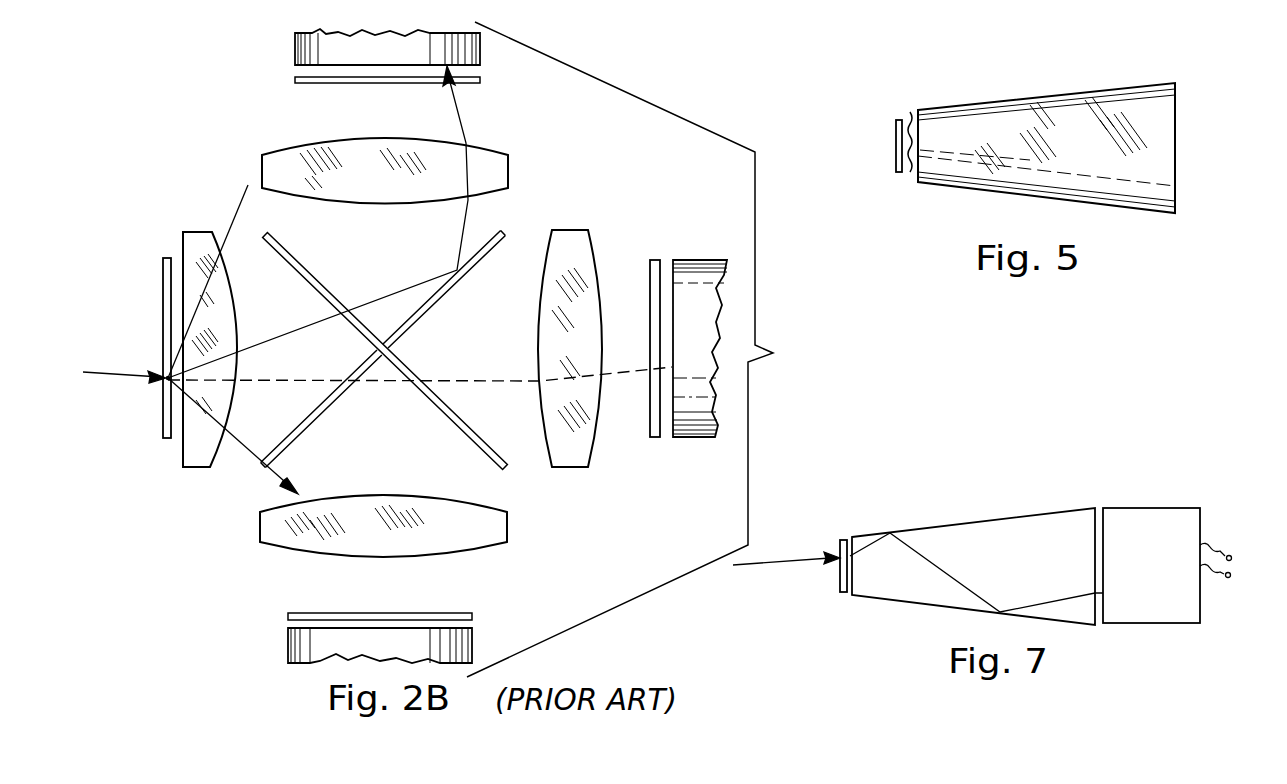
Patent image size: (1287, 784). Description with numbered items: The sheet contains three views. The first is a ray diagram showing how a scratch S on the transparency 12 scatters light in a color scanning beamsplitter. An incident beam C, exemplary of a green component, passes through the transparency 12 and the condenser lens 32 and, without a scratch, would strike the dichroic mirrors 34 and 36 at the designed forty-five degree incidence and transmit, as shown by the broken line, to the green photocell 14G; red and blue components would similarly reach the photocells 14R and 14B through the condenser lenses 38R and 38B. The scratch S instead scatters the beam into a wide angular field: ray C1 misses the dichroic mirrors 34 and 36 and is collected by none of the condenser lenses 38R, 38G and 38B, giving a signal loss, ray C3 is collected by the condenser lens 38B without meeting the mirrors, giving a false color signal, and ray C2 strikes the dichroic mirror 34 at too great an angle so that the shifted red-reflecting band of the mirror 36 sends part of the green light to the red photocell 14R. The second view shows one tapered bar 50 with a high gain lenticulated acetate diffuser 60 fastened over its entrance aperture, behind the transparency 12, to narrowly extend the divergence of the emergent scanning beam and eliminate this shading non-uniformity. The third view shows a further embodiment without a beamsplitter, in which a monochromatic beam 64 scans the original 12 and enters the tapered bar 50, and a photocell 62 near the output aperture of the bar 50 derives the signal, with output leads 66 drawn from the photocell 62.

In FIG. 2B, the transparency 12 is at (163, 274).
In FIG. 5, the transparency 12 is at (896, 146).
In FIG. 7, the transparency 12 is at (840, 576).
In FIG. 2B, the red photocell 14R is at (296, 58).
In FIG. 2B, the green photocell 14G is at (703, 264).
In FIG. 2B, the blue photocell 14B is at (288, 645).
In FIG. 2B, the condenser lens 32 is at (192, 463).
In FIG. 2B, the dichroic mirror 34 is at (483, 255).
In FIG. 2B, the dichroic mirror 36 is at (298, 253).
In FIG. 2B, the red condenser lens 38R is at (492, 158).
In FIG. 2B, the green condenser lens 38G is at (570, 233).
In FIG. 2B, the blue condenser lens 38B is at (482, 540).
In FIG. 2B, the incident beam C is at (103, 372).
In FIG. 2B, the scattered ray C1 is at (232, 202).
In FIG. 2B, the scattered ray C2 is at (278, 328).
In FIG. 2B, the scattered ray C3 is at (248, 466).
In FIG. 2B, the scratch S is at (164, 385).
In FIG. 5, the tapered bar 50 is at (1050, 104).
In FIG. 7, the tapered bar 50 is at (968, 522).
In FIG. 5, the high gain lenticulated acetate diffuser 60 is at (906, 112).
In FIG. 7, the photocell 62 is at (1160, 515).
In FIG. 7, the monochromatic beam 64 is at (774, 558).
In FIG. 7, the output leads 66 is at (1233, 563).